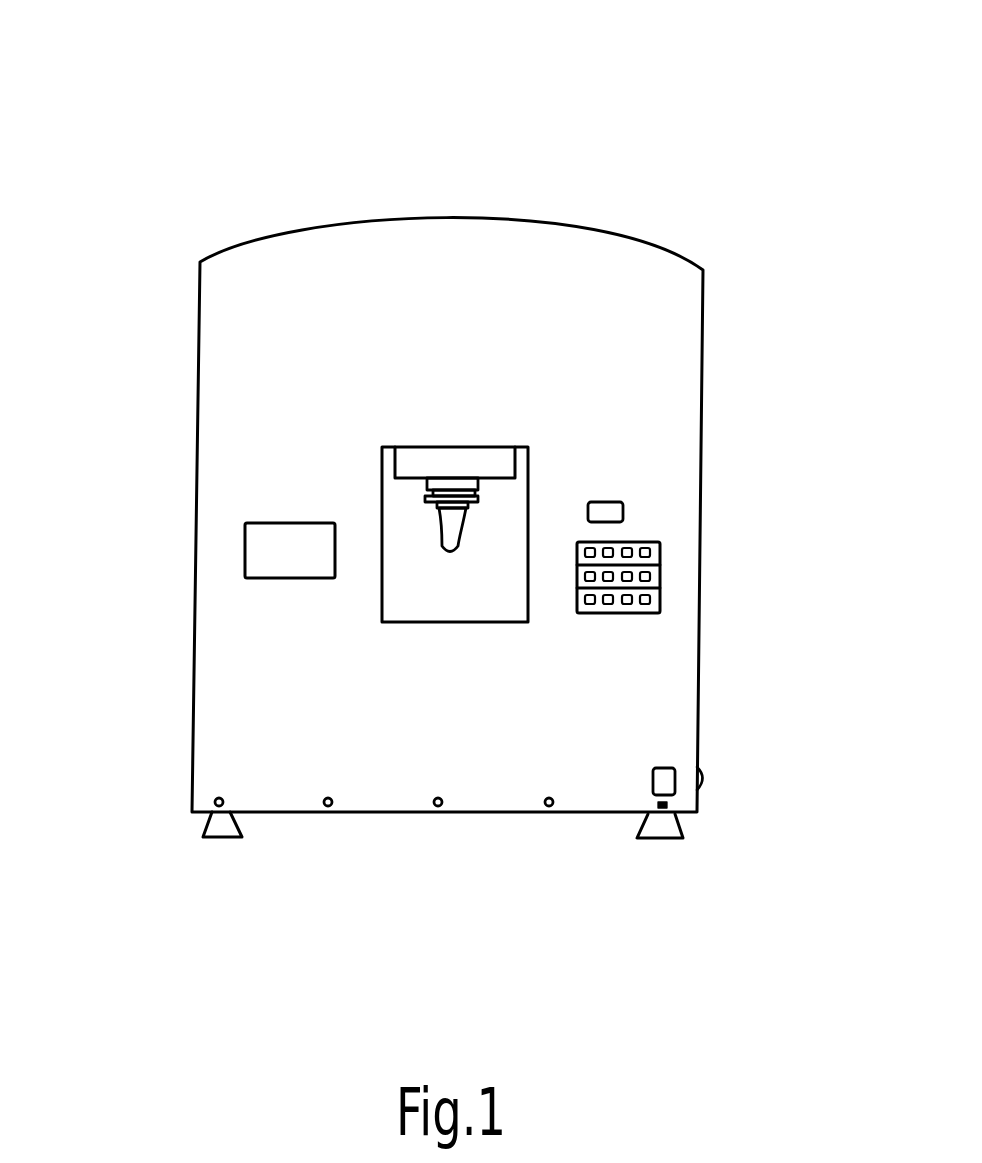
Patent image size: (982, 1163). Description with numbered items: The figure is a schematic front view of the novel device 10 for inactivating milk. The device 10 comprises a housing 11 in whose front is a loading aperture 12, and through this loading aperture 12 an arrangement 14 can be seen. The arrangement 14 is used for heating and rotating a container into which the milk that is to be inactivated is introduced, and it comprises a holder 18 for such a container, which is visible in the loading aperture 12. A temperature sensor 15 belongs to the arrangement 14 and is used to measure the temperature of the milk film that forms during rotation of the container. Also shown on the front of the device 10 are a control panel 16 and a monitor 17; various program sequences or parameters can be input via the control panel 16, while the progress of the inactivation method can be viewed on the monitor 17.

The device 10 is at (560, 152).
The housing 11 is at (635, 283).
The loading aperture 12 is at (440, 602).
The arrangement 14 is at (473, 552).
The temperature sensor 15 is at (432, 553).
The control panel 16 is at (660, 573).
The monitor 17 is at (262, 542).
The holder 18 is at (502, 488).